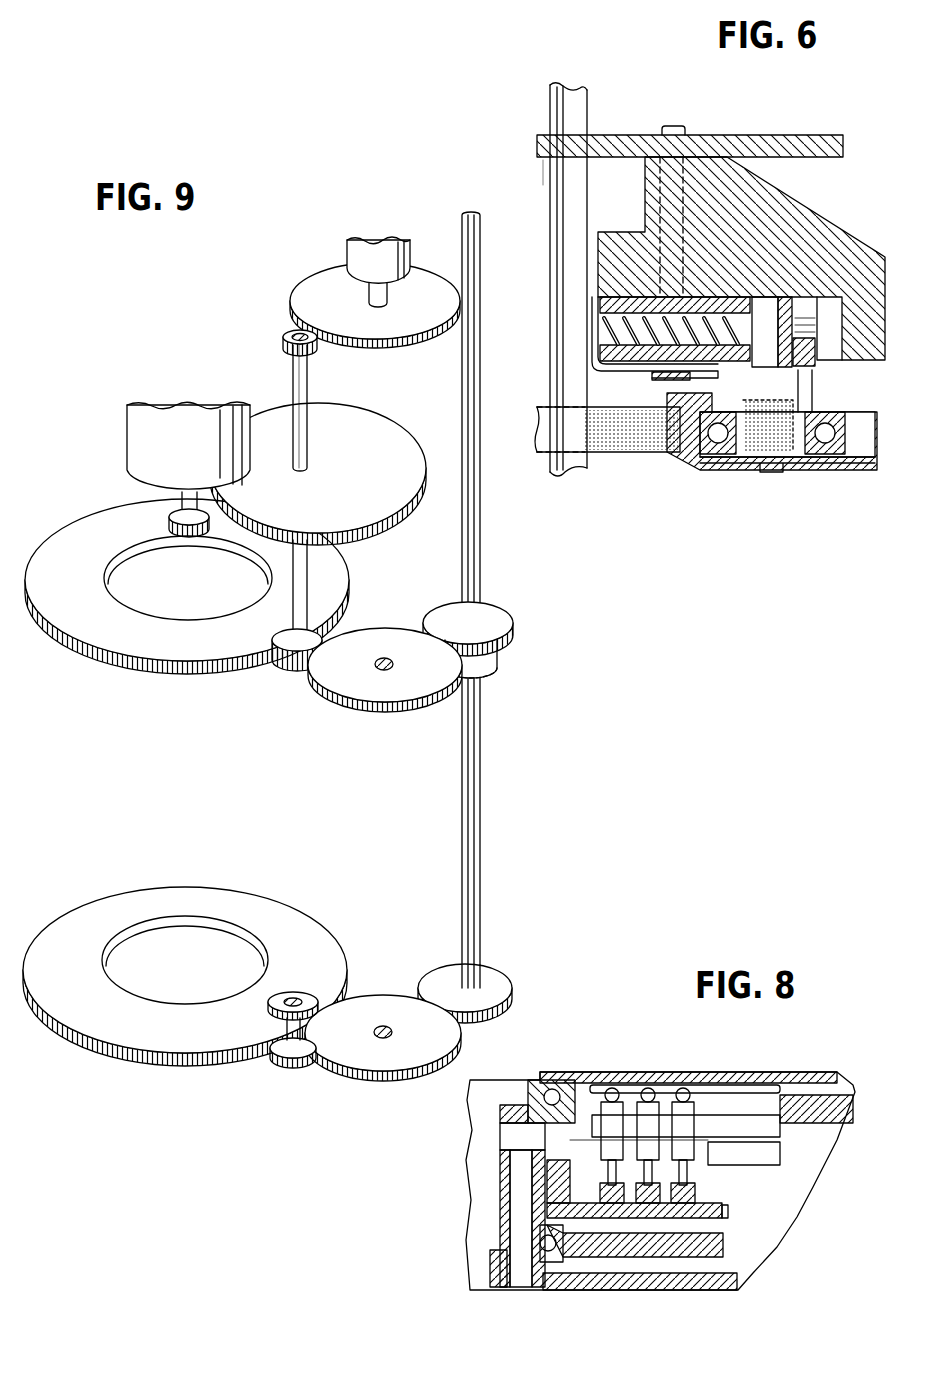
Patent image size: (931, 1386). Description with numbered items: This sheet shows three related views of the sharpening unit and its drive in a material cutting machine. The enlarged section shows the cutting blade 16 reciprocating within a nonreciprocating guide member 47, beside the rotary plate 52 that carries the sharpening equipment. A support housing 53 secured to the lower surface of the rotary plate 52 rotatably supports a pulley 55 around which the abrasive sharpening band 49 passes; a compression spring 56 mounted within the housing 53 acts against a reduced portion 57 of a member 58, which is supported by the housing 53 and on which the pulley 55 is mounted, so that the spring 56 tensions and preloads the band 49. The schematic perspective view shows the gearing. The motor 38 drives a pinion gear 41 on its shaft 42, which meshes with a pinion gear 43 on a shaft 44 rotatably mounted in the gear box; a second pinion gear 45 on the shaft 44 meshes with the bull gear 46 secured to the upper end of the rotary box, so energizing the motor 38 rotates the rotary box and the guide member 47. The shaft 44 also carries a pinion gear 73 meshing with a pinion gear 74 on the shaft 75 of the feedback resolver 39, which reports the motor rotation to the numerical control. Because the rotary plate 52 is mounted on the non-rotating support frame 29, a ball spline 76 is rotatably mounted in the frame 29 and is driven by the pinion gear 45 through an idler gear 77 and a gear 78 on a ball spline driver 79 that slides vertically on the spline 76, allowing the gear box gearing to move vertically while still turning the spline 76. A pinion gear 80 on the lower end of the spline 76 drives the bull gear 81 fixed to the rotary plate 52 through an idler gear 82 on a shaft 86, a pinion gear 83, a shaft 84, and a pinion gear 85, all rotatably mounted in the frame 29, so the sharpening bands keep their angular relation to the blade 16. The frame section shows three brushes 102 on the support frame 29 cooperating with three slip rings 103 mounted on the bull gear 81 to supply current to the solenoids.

In FIG. 6, the cutting blade 16 is at (540, 173).
In FIG. 6, the guide member 47 is at (588, 118).
In FIG. 6, the rotary plate 52 is at (772, 132).
In FIG. 8, the rotary plate 52 is at (725, 1292).
In FIG. 6, the support housing 53 is at (830, 212).
In FIG. 6, the compression spring 56 is at (620, 347).
In FIG. 6, the reduced portion 57 is at (802, 352).
In FIG. 6, the member 58 is at (824, 392).
In FIG. 6, the sharpening band 49 is at (618, 453).
In FIG. 6, the pulley 55 is at (672, 464).
In FIG. 9, the motor 38 is at (122, 427).
In FIG. 9, the feedback resolver 39 is at (342, 250).
In FIG. 9, the pinion gear 41 is at (170, 521).
In FIG. 9, the shaft 42 is at (182, 500).
In FIG. 9, the pinion gear 43 is at (318, 474).
In FIG. 9, the shaft 44 is at (293, 386).
In FIG. 9, the second pinion gear 45 is at (280, 672).
In FIG. 9, the bull gear 46 is at (130, 666).
In FIG. 9, the pinion gear 73 is at (283, 338).
In FIG. 9, the pinion gear 74 is at (292, 306).
In FIG. 9, the shaft 75 is at (372, 296).
In FIG. 9, the ball spline 76 is at (482, 762).
In FIG. 9, the idler gear 77 is at (350, 715).
In FIG. 9, the gear 78 is at (513, 632).
In FIG. 9, the ball spline driver 79 is at (500, 667).
In FIG. 9, the pinion gear 80 is at (505, 976).
In FIG. 9, the bull gear 81 is at (185, 1060).
In FIG. 8, the bull gear 81 is at (740, 1258).
In FIG. 9, the idler gear 82 is at (380, 1085).
In FIG. 9, the pinion gear 83 is at (305, 992).
In FIG. 9, the shaft 84 is at (284, 1050).
In FIG. 9, the pinion gear 85 is at (292, 1068).
In FIG. 9, the shaft 86 is at (385, 1027).
In FIG. 8, the support frame 29 is at (850, 1085).
In FIG. 8, the brushes 102 is at (692, 1170).
In FIG. 8, the slip rings 103 is at (700, 1196).